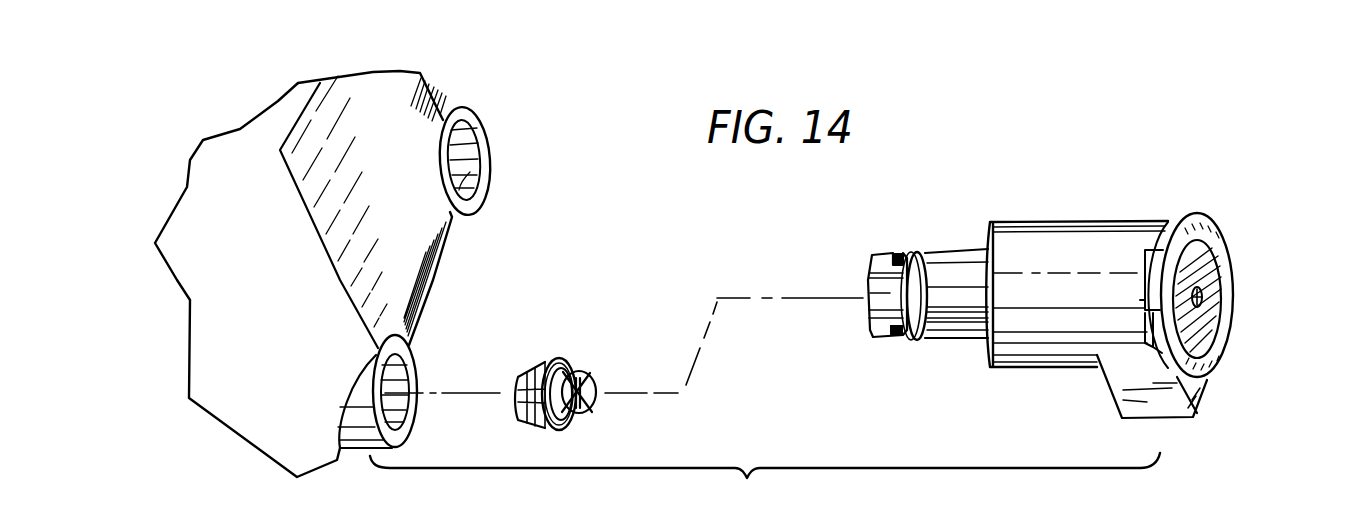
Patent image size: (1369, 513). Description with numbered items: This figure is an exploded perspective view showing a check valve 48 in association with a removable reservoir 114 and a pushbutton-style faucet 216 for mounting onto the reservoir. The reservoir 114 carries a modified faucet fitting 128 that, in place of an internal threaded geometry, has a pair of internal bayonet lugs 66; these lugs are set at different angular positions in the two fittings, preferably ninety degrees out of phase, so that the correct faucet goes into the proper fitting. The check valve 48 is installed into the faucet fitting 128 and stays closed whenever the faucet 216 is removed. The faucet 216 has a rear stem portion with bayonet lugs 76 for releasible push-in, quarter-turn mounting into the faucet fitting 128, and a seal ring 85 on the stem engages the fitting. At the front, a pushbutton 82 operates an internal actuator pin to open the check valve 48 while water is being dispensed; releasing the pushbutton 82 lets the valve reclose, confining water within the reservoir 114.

The reservoir 114 is at (255, 414).
The faucet fitting 128 is at (503, 177).
The bayonet lugs 66 is at (490, 166).
The check valve 48 is at (579, 363).
The bayonet lugs 76 is at (885, 250).
The seal ring 85 is at (933, 250).
The faucet 216 is at (1093, 216).
The pushbutton 82 is at (1208, 290).